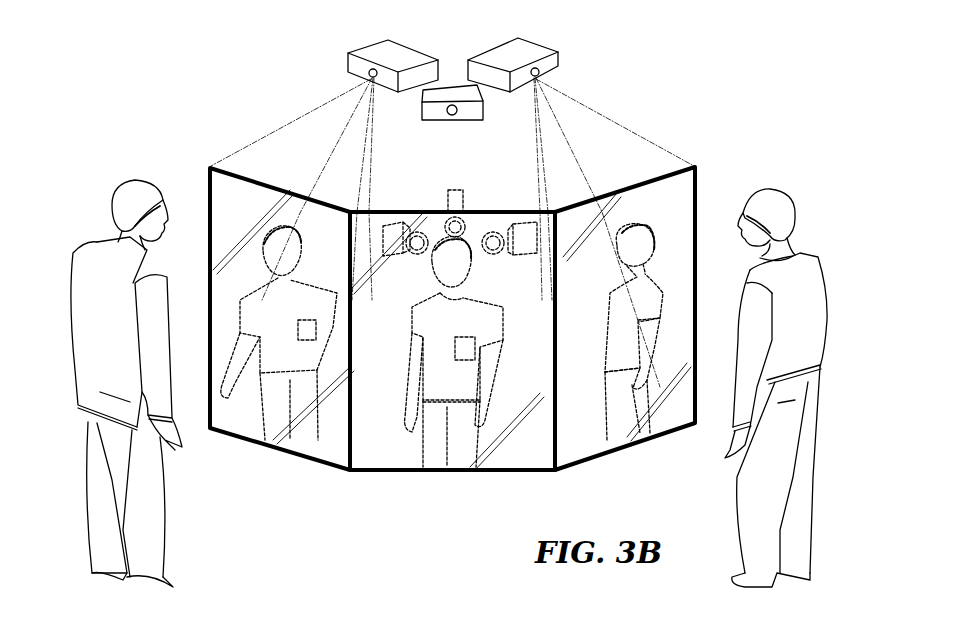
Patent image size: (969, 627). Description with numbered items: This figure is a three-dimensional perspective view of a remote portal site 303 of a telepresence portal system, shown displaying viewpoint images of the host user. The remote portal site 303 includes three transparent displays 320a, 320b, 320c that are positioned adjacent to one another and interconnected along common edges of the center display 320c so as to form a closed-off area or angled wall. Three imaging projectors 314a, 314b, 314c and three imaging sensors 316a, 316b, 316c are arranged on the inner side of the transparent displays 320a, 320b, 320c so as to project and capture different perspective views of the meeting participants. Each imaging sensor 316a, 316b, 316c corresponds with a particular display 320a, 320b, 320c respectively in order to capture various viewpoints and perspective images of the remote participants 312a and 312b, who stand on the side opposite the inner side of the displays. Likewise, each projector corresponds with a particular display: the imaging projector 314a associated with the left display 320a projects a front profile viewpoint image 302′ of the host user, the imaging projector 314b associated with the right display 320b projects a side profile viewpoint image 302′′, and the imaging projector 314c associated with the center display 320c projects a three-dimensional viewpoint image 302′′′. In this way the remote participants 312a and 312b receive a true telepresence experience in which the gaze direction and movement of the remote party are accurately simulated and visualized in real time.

The remote portal site 303 is at (254, 48).
The imaging projector 314a is at (560, 62).
The imaging projector 314b is at (348, 62).
The imaging projector 314c is at (425, 122).
The imaging sensor 316a is at (530, 257).
The imaging sensor 316b is at (398, 258).
The imaging sensor 316c is at (455, 188).
The left transparent display 320a is at (325, 468).
The right transparent display 320b is at (578, 468).
The center transparent display 320c is at (400, 472).
The viewpoint image 302′ is at (326, 290).
The viewpoint image 302′′ is at (603, 302).
The viewpoint image 302′′′ is at (412, 396).
The remote participant 312a is at (95, 240).
The remote participant 312b is at (795, 212).